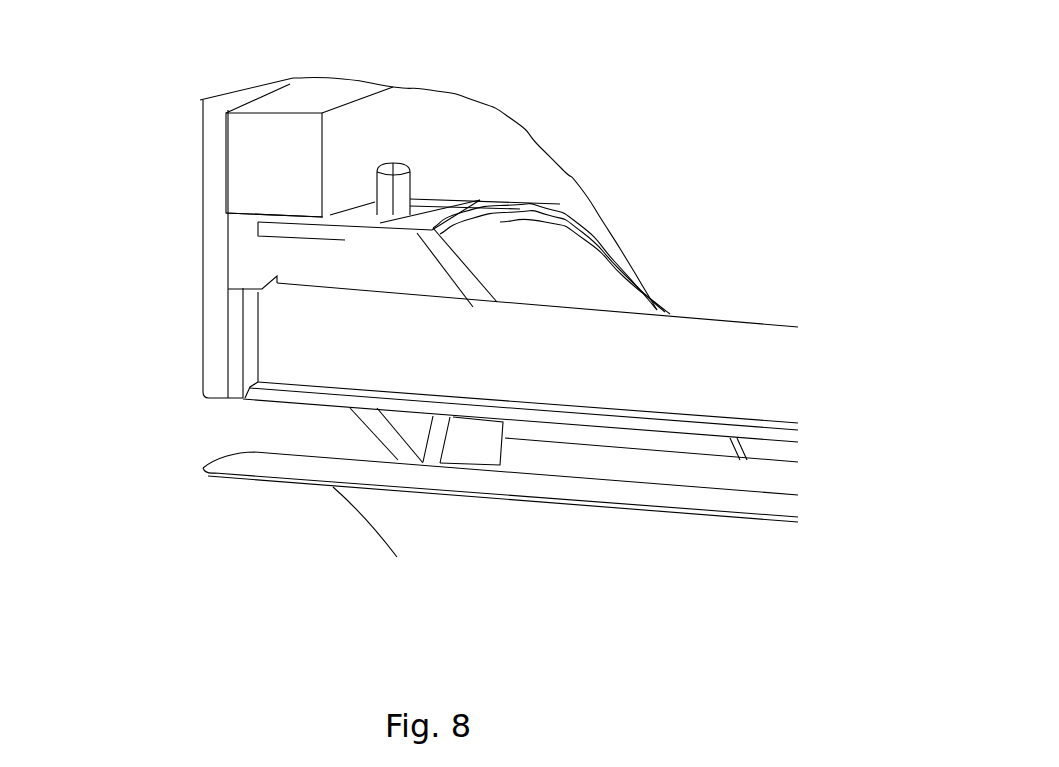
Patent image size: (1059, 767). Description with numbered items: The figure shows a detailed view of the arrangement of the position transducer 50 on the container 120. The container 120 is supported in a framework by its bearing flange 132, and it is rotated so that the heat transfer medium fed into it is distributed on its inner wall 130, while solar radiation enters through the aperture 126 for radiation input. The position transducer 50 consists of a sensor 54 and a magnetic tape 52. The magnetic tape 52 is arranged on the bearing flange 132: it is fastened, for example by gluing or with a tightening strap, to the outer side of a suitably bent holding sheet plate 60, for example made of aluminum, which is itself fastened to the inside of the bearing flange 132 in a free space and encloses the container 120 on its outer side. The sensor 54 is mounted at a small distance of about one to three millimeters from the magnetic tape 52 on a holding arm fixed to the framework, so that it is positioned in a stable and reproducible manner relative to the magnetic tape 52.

The position transducer 50 is at (348, 224).
The magnetic tape 52 is at (463, 208).
The sensor 54 is at (400, 170).
The holding sheet plate 60 is at (655, 282).
The container 120 is at (230, 422).
The aperture for radiation input 126 is at (257, 630).
The inner wall 130 is at (320, 483).
The bearing flange 132 is at (257, 140).